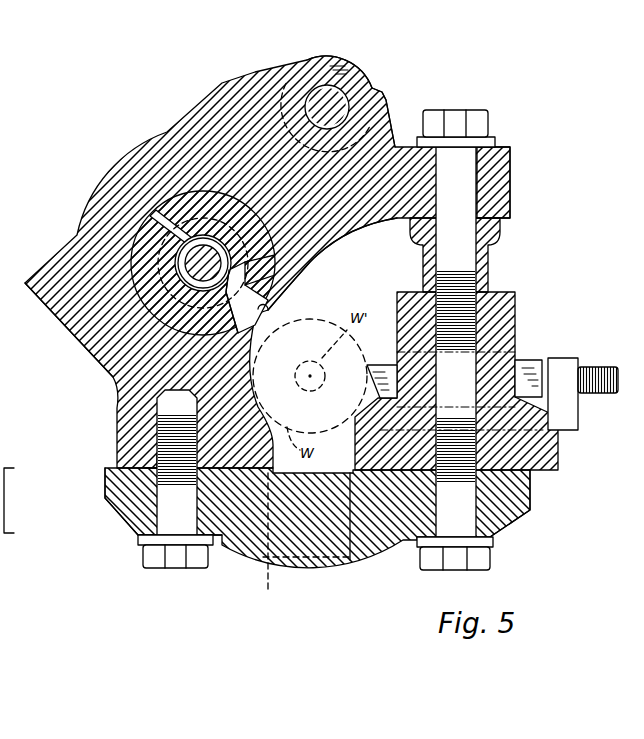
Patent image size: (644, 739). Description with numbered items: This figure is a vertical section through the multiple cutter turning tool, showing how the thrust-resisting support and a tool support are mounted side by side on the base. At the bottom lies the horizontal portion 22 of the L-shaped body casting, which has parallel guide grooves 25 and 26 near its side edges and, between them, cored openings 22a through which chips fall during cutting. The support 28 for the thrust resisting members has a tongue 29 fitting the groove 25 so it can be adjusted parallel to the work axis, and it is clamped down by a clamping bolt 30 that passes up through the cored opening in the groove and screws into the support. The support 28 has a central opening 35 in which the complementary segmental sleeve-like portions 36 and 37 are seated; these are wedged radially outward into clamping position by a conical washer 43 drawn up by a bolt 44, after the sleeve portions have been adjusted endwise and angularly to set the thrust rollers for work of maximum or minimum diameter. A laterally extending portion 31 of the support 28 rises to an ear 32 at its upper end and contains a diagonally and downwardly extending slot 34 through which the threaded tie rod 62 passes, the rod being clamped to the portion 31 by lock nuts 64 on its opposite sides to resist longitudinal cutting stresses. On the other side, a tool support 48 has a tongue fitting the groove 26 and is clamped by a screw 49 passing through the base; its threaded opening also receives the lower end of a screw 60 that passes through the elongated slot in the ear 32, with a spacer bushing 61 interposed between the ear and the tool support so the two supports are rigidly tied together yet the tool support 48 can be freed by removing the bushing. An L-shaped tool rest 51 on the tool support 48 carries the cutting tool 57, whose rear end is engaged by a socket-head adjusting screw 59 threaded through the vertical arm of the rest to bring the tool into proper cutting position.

The horizontal portion 22 is at (375, 542).
The cored openings 22a is at (279, 541).
The guide groove 25 is at (156, 512).
The guide groove 26 is at (508, 505).
The support 28 is at (111, 380).
The tongue 29 is at (152, 470).
The clamping bolt 30 is at (141, 534).
The laterally extending portion 31 is at (347, 226).
The ear 32 is at (512, 150).
The slot 34 is at (376, 90).
The central opening 35 is at (266, 305).
The segmental sleeve-like portion 36 is at (93, 360).
The segmental sleeve-like portion 37 is at (189, 198).
The conical washer 43 is at (224, 302).
The bolt 44 is at (215, 259).
The tool support 48 is at (558, 453).
The screw 49 is at (465, 510).
The L-shaped tool rest 51 is at (565, 358).
The tool 57 is at (530, 360).
The adjusting screw 59 is at (597, 367).
The screw 60 is at (463, 203).
The spacer bushing 61 is at (488, 258).
The tie rod 62 is at (337, 92).
The lock nuts 64 is at (333, 62).